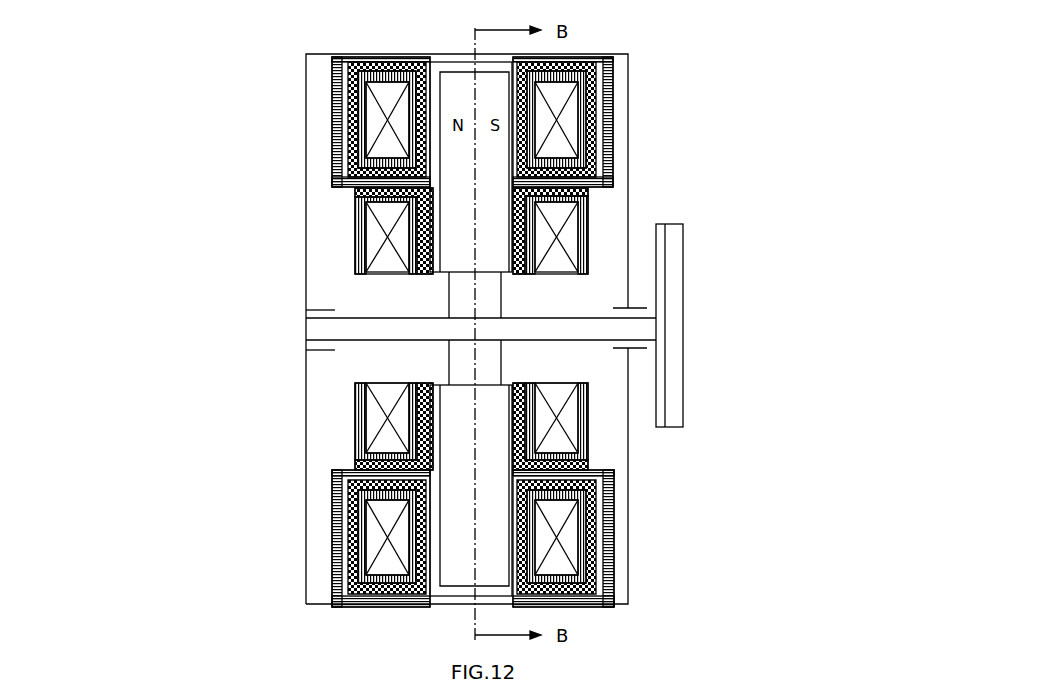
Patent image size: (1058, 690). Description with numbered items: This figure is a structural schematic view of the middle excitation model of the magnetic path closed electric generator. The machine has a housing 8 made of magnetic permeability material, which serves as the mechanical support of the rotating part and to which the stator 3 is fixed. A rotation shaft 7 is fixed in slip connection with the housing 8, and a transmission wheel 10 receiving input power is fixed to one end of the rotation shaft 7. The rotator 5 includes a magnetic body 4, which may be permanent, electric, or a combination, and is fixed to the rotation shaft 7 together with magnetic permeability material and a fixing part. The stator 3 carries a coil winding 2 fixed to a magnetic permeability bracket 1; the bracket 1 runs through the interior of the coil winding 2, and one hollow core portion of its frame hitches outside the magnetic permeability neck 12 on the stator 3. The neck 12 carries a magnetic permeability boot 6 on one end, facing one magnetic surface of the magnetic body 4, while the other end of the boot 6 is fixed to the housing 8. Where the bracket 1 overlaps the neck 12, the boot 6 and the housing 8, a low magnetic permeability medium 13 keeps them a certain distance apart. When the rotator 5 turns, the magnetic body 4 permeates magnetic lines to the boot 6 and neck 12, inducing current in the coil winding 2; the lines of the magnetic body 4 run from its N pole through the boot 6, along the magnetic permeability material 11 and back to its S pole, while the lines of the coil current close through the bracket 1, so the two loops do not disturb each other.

The magnetic permeability bracket 1 is at (316, 99).
The coil winding 2 is at (316, 537).
The stator 3 is at (410, 614).
The magnetic body 4 is at (359, 466).
The rotator 5 is at (354, 312).
The magnetic permeability boot 6 is at (634, 443).
The rotation shaft 7 is at (530, 260).
The housing 8 is at (530, 344).
The transmission wheel 10 is at (705, 325).
The magnetic permeability material 11 is at (410, 538).
The magnetic permeability neck 12 is at (410, 122).
The low magnetic permeability medium 13 is at (636, 537).